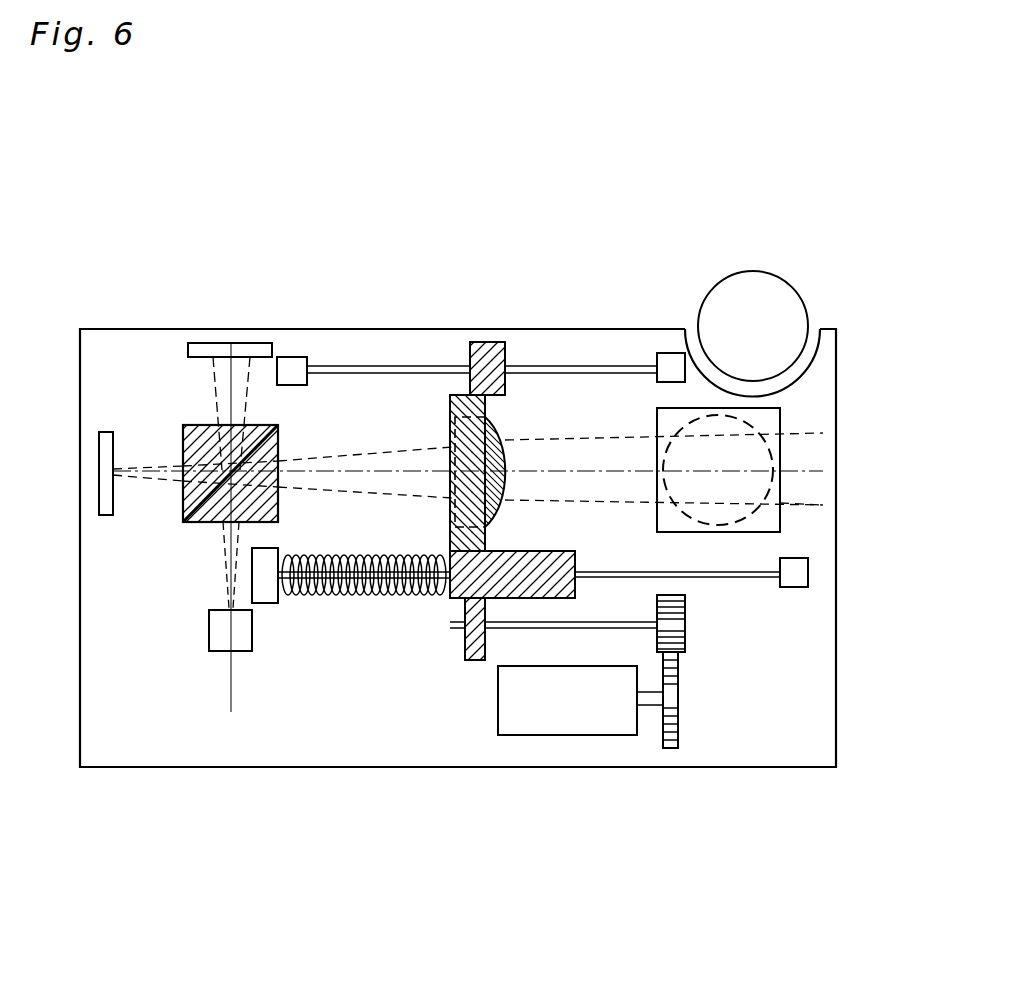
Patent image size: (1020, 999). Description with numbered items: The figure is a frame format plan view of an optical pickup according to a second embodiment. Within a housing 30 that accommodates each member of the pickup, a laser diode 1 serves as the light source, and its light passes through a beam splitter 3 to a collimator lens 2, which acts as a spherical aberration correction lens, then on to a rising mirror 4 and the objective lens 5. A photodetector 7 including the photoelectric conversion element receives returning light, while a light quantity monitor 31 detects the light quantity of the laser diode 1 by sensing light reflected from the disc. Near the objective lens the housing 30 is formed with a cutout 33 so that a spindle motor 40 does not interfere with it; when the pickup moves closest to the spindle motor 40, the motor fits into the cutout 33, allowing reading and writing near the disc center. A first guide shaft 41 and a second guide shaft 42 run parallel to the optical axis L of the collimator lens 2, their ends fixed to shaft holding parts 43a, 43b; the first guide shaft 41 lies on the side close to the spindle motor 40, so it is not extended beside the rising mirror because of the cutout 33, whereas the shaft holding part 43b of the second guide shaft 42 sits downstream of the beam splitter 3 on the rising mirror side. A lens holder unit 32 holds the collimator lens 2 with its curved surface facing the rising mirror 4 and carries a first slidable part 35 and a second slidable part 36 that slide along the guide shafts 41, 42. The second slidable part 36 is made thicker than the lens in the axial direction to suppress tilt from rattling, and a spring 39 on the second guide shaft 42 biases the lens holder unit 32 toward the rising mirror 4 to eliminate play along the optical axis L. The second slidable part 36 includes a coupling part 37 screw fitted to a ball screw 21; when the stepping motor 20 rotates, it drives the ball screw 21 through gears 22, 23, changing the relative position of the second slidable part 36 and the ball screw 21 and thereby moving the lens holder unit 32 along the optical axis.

The laser diode 1 is at (208, 634).
The collimator lens 2 is at (490, 440).
The beam splitter 3 is at (206, 522).
The rising mirror 4 is at (776, 420).
The objective lens 5 is at (820, 482).
The photodetector 7 is at (104, 432).
The stepping motor 20 is at (538, 722).
The ball screw 21 is at (580, 620).
The gear 22 is at (672, 680).
The gear 23 is at (687, 626).
The housing 30 is at (836, 344).
The light quantity monitor 31 is at (200, 343).
The lens holder unit 32 is at (484, 342).
The cutout 33 is at (808, 365).
The first slidable part 35 is at (500, 360).
The second slidable part 36 is at (575, 556).
The coupling part 37 is at (465, 652).
The spring 39 is at (362, 596).
The spindle motor 40 is at (752, 272).
The first guide shaft 41 is at (390, 366).
The second guide shaft 42 is at (690, 570).
The shaft holding parts 43a is at (294, 358).
The shaft holding part 43b is at (265, 600).
The optical axis L is at (386, 470).